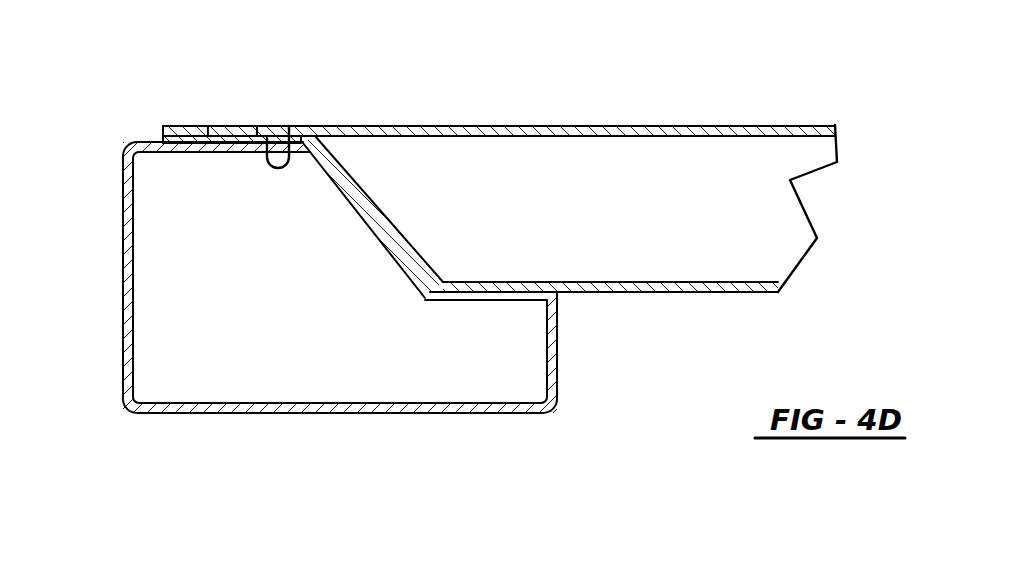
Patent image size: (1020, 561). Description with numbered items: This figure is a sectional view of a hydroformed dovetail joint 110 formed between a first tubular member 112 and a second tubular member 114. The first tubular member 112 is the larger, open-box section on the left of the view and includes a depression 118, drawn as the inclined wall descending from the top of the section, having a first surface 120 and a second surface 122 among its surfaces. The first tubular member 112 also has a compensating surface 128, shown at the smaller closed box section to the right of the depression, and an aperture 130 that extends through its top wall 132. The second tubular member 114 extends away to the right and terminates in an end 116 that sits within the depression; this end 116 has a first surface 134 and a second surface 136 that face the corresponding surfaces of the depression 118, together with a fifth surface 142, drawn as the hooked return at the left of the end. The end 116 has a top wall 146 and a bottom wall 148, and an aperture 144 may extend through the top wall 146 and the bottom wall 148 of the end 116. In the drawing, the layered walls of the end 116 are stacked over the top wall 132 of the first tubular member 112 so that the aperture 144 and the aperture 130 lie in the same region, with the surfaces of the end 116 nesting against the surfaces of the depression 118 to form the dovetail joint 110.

The joint 110 is at (410, 101).
The first tubular member 112 is at (125, 303).
The second tubular member 114 is at (764, 125).
The end 116 is at (447, 125).
The depression 118 is at (383, 224).
The first surface 120 is at (510, 292).
The second surface 122 is at (402, 265).
The compensating surface 128 is at (553, 352).
The aperture 130 is at (212, 152).
The top wall 132 is at (152, 143).
The first surface 134 is at (455, 286).
The second surface 136 is at (383, 227).
The fifth surface 142 is at (289, 126).
The aperture 144 is at (222, 127).
The top wall 146 is at (160, 140).
The bottom wall 148 is at (183, 127).